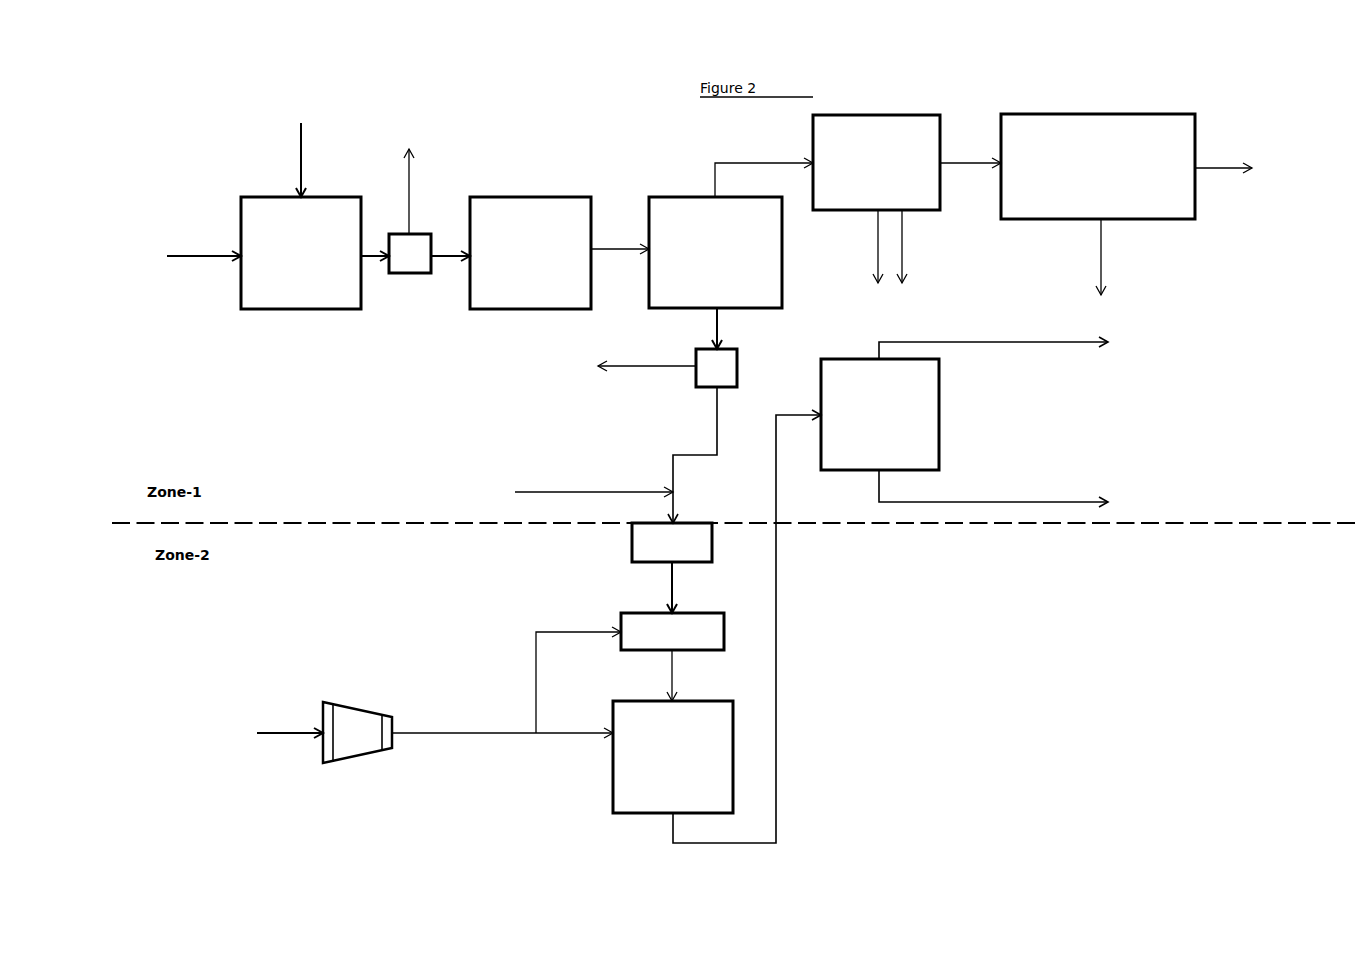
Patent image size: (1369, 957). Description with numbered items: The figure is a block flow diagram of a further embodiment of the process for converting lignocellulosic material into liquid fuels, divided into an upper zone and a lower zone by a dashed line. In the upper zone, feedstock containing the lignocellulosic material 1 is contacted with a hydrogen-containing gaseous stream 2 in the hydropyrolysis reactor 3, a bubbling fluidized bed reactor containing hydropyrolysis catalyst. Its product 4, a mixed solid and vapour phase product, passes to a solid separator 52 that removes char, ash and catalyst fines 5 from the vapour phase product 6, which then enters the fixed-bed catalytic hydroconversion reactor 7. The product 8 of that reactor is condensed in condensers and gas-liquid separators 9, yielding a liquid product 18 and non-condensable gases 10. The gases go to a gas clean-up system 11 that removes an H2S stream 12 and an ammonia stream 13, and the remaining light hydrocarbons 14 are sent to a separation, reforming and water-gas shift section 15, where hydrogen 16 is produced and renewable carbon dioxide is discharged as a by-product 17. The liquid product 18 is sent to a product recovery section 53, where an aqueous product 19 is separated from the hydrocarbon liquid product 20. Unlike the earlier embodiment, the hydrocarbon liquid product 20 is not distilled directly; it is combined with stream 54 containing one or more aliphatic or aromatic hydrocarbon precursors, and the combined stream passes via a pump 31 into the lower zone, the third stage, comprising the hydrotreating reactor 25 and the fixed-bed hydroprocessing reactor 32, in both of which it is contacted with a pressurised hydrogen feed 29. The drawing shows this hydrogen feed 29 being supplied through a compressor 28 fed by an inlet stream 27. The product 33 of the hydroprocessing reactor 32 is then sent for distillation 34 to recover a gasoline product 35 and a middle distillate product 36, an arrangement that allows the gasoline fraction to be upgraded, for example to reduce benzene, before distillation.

The lignocellulosic material feedstock 1 is at (204, 266).
The hydrogen-containing gaseous stream 2 is at (306, 160).
The hydropyrolysis reactor 3 is at (301, 253).
The hydropyrolysis reactor product 4 is at (375, 261).
The char, ash and catalyst fines 5 is at (414, 191).
The vapour phase product 6 is at (450, 261).
The catalytic hydroconversion reactor 7 is at (530, 253).
The hydroconversion reactor product 8 is at (620, 257).
The condensers and gas-liquid separators 9 is at (715, 252).
The non-condensable gases 10 is at (764, 162).
The gas clean-up system 11 is at (876, 162).
The H2S stream 12 is at (863, 246).
The ammonia stream 13 is at (909, 246).
The light hydrocarbons stream 14 is at (970, 153).
The separation, reforming and water-gas shift section 15 is at (1098, 166).
The hydrogen 16 is at (1223, 175).
The renewable CO2 by-product 17 is at (1090, 257).
The liquid product 18 is at (708, 328).
The aqueous product 19 is at (647, 355).
The hydrocarbon liquid product 20 is at (692, 455).
The hydrotreating reactor 25 is at (672, 657).
The air feed stream 27 is at (290, 739).
The compressor 28 is at (357, 746).
The pressurised hydrogen feed 29 is at (506, 682).
The pump 31 is at (672, 568).
The hydroprocessing reactor 32 is at (673, 757).
The hydroprocessing reactor product 33 is at (747, 626).
The distillation 34 is at (880, 414).
The gasoline product 35 is at (1008, 346).
The middle distillate product 36 is at (1008, 490).
The solid separator 52 is at (410, 253).
The product recovery section 53 is at (716, 368).
The hydrocarbon precursor stream 54 is at (594, 483).